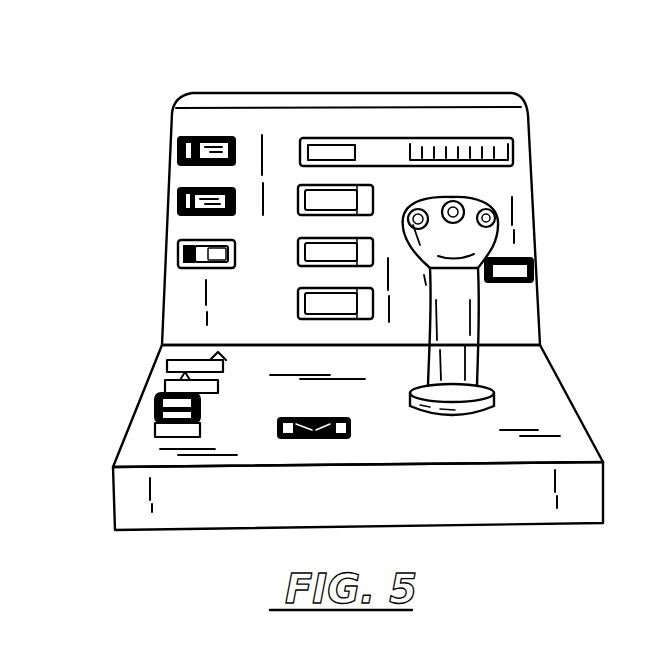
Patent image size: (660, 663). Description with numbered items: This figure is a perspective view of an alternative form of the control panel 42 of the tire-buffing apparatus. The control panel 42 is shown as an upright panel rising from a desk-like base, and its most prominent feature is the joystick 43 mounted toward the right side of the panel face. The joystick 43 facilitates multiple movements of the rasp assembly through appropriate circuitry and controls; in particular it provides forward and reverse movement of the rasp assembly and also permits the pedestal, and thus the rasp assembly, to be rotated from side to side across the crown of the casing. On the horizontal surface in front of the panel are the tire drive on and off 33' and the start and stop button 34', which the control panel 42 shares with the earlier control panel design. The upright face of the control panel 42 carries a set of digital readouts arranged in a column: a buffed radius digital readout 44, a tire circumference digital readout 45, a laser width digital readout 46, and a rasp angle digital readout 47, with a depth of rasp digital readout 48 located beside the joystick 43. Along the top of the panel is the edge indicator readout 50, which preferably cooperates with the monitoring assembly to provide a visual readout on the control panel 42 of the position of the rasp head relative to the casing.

The control panel 42 is at (361, 99).
The joystick 43 is at (472, 319).
The buffed radius digital readout 44 is at (316, 202).
The tire circumference digital readout 45 is at (318, 253).
The laser width digital readout 46 is at (320, 148).
The rasp angle digital readout 47 is at (318, 306).
The depth of rasp digital readout 48 is at (531, 262).
The edge indicator readout 50 is at (510, 142).
The start and stop button 34' is at (130, 394).
The tire drive on and off 33' is at (307, 411).